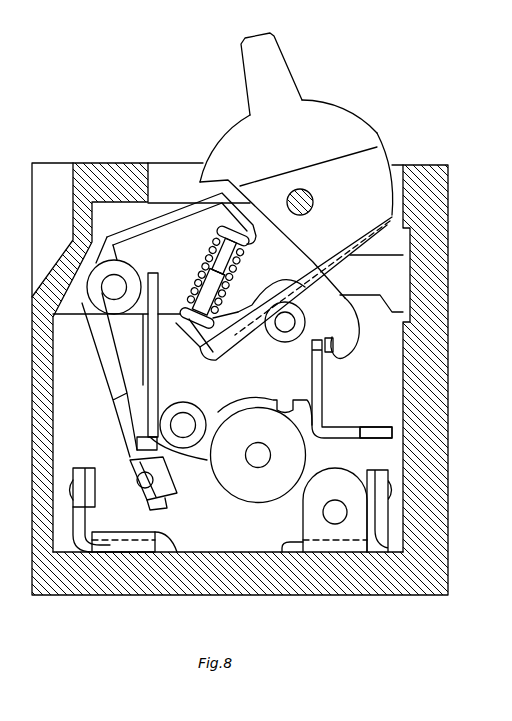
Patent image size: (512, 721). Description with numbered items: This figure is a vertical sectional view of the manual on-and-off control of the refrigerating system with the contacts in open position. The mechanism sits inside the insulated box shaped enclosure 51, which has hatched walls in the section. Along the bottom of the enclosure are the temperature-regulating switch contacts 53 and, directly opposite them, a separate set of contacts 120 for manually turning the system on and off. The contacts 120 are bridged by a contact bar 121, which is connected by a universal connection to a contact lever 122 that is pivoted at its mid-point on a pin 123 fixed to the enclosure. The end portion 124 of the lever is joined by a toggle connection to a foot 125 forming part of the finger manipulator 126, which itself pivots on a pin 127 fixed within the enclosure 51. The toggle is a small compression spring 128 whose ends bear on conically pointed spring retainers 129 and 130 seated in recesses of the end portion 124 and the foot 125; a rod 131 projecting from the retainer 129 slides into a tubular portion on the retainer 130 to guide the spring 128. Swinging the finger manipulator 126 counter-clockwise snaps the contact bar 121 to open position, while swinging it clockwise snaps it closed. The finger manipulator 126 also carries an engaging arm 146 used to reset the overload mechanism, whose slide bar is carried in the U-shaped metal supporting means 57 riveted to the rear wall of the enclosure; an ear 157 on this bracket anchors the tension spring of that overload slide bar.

The insulated box shaped enclosure 51 is at (432, 508).
The switch contacts 53 is at (383, 527).
The U-shaped metal supporting means 57 is at (156, 305).
The contacts 120 is at (80, 520).
The contact bar 121 is at (130, 468).
The contact lever 122 is at (108, 362).
The pin 123 is at (115, 284).
The end portion of the lever 124 is at (227, 210).
The foot 125 is at (197, 350).
The finger manipulator 126 is at (330, 118).
The pin 127 is at (306, 190).
The compression spring 128 is at (240, 268).
The spring retainer 129 is at (246, 233).
The spring retainer 130 is at (200, 331).
The rod 131 is at (218, 249).
The engaging arm 146 is at (340, 322).
The ear 157 is at (378, 435).